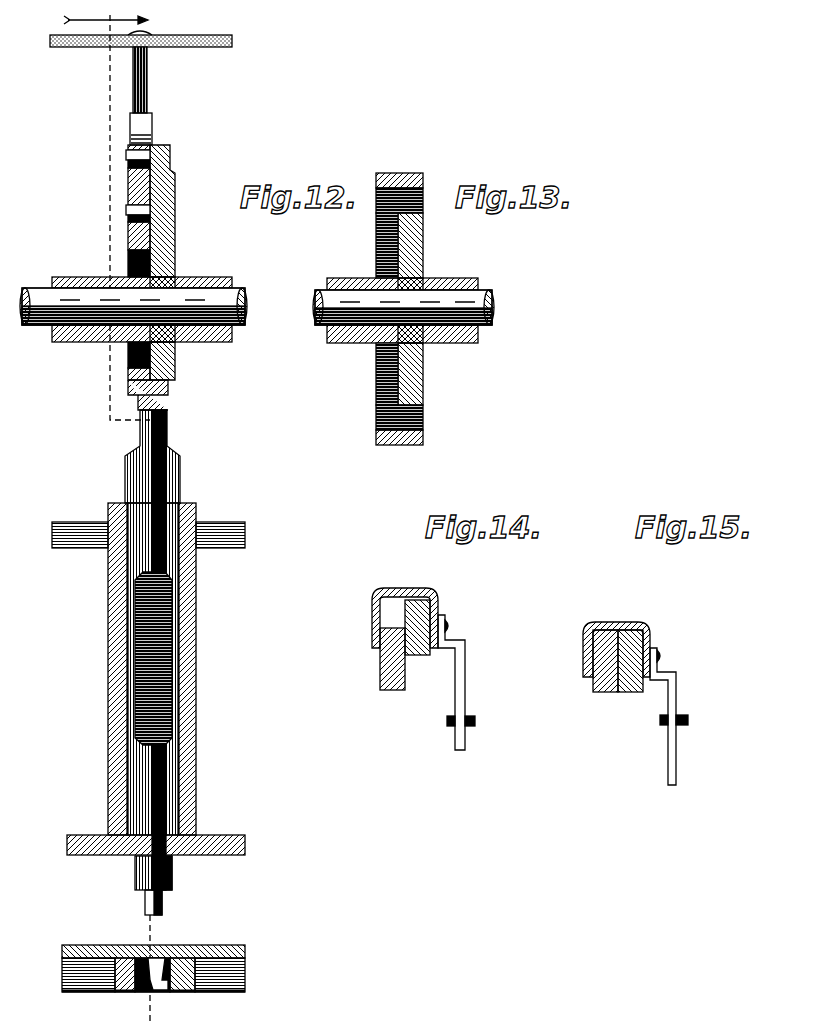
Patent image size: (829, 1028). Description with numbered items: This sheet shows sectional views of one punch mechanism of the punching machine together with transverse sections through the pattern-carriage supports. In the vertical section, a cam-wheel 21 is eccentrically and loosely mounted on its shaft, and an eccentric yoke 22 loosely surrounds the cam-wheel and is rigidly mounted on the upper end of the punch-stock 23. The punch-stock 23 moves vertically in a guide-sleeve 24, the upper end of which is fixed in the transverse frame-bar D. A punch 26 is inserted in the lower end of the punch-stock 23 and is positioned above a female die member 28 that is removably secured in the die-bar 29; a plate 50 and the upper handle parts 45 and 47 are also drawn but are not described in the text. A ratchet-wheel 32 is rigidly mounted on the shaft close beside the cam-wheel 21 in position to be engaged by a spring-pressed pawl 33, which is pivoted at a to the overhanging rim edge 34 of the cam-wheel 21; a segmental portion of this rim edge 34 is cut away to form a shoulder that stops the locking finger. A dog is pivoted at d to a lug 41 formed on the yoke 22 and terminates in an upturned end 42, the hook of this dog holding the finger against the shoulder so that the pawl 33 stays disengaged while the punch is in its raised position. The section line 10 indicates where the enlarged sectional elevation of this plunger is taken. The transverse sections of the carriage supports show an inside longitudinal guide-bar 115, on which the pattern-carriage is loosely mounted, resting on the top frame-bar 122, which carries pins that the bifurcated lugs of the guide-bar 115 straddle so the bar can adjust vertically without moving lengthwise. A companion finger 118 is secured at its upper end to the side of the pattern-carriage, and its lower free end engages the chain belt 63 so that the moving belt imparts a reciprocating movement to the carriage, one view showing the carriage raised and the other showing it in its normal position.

In FIG. 12, the section line 10 is at (106, 12).
In FIG. 12, the top plate 45 is at (186, 47).
In FIG. 12, the stem 47 is at (147, 93).
In FIG. 12, the upturned end 42 is at (142, 128).
In FIG. 12, the lug 41 is at (172, 165).
In FIG. 12, the pivot d is at (126, 156).
In FIG. 12, the eccentric yoke 22 is at (128, 184).
In FIG. 13, the eccentric yoke 22 is at (406, 176).
In FIG. 12, the pawl pivot a is at (126, 213).
In FIG. 12, the pawl 33 is at (128, 245).
In FIG. 12, the cam-wheel 21 is at (176, 249).
In FIG. 13, the cam-wheel 21 is at (412, 377).
In FIG. 12, the ratchet-wheel 32 is at (176, 348).
In FIG. 13, the ratchet-wheel 32 is at (377, 350).
In FIG. 12, the overhanging rim edge 34 is at (128, 379).
In FIG. 13, the overhanging rim edge 34 is at (377, 218).
In FIG. 12, the punch-stock 23 is at (168, 478).
In FIG. 12, the transverse frame-bar D is at (222, 525).
In FIG. 12, the guide-sleeve 24 is at (110, 633).
In FIG. 12, the punch 26 is at (162, 905).
In FIG. 12, the cover plate 50 is at (82, 956).
In FIG. 12, the die-bar 29 is at (232, 976).
In FIG. 12, the female die member 28 is at (152, 990).
In FIG. 14, the top frame-bar 122 is at (380, 680).
In FIG. 15, the top frame-bar 122 is at (592, 688).
In FIG. 14, the guide-bar 115 is at (420, 652).
In FIG. 15, the guide-bar 115 is at (628, 695).
In FIG. 14, the finger 118 is at (463, 698).
In FIG. 15, the finger 118 is at (678, 764).
In FIG. 14, the chain belt 63 is at (476, 726).
In FIG. 15, the chain belt 63 is at (690, 722).